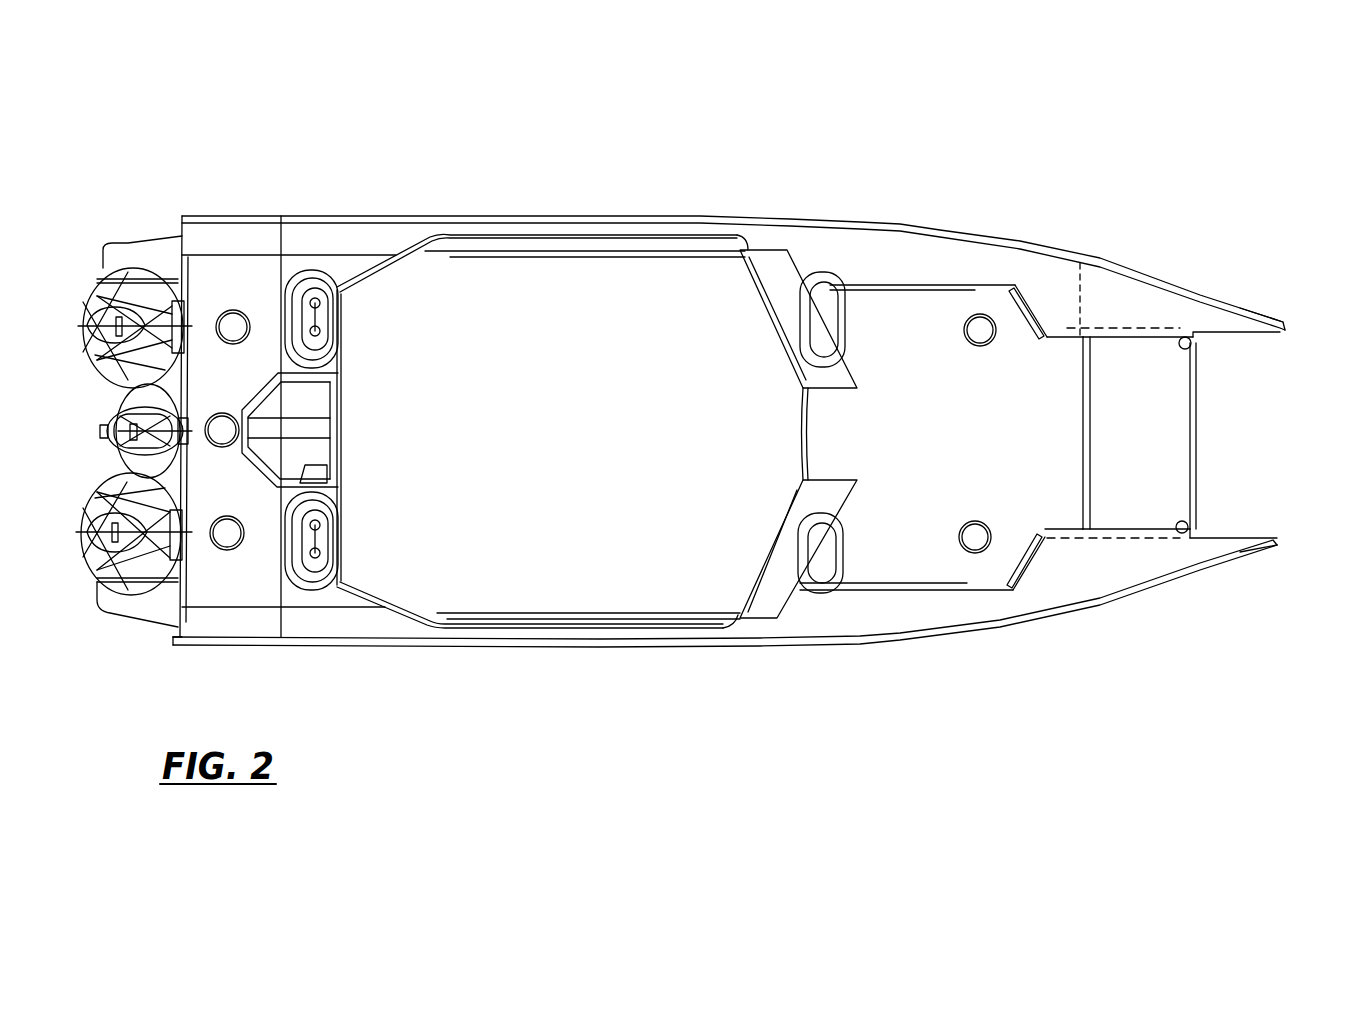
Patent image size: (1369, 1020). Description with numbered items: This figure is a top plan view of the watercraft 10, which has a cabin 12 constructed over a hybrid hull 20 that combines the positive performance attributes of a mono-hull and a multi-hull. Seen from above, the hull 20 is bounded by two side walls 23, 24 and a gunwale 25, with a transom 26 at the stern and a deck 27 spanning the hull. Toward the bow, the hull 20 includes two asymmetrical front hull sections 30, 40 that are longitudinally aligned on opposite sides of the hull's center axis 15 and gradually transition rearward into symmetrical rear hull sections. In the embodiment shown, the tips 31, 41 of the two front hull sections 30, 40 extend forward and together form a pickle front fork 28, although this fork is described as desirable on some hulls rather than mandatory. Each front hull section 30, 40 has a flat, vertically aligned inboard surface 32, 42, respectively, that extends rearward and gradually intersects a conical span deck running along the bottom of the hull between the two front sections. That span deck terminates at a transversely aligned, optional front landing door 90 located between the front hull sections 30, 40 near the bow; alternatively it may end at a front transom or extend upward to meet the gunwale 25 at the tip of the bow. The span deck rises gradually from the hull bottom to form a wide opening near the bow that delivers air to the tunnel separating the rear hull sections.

The watercraft 10 is at (298, 133).
The cabin 12 is at (568, 454).
The center axis 15 is at (863, 440).
The hybrid hull 20 is at (958, 222).
The side wall 23 is at (428, 652).
The side wall 24 is at (449, 213).
The gunwale 25 is at (783, 217).
The transom 26 is at (122, 245).
The deck 27 is at (1000, 506).
The pickle front fork 28 is at (1300, 545).
The asymmetrical front hull section 30 is at (1090, 585).
The tip 31 is at (1264, 551).
The inboard surface 32 is at (1205, 537).
The asymmetrical front hull section 40 is at (1124, 276).
The tip 41 is at (1272, 326).
The inboard surface 42 is at (1222, 340).
The front landing door 90 is at (1148, 449).